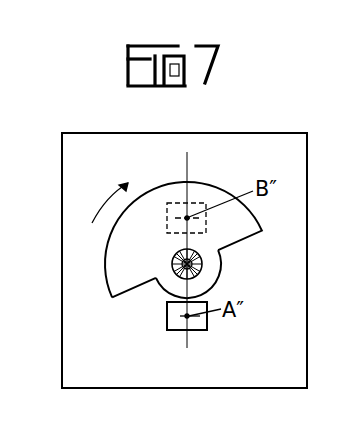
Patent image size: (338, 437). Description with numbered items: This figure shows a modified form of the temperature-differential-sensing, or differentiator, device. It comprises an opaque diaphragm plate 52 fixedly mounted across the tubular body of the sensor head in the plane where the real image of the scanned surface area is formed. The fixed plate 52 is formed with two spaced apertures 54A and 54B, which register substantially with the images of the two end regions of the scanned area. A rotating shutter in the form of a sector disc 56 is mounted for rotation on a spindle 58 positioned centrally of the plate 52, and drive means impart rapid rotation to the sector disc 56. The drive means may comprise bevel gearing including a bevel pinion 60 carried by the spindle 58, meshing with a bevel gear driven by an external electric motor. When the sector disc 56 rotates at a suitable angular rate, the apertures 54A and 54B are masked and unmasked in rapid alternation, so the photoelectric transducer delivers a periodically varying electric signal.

The opaque diaphragm plate 52 is at (62, 266).
The aperture 54A is at (206, 201).
The aperture 54B is at (209, 329).
The sector disc 56 is at (179, 184).
The spindle 58 is at (202, 264).
The bevel pinion 60 is at (173, 258).